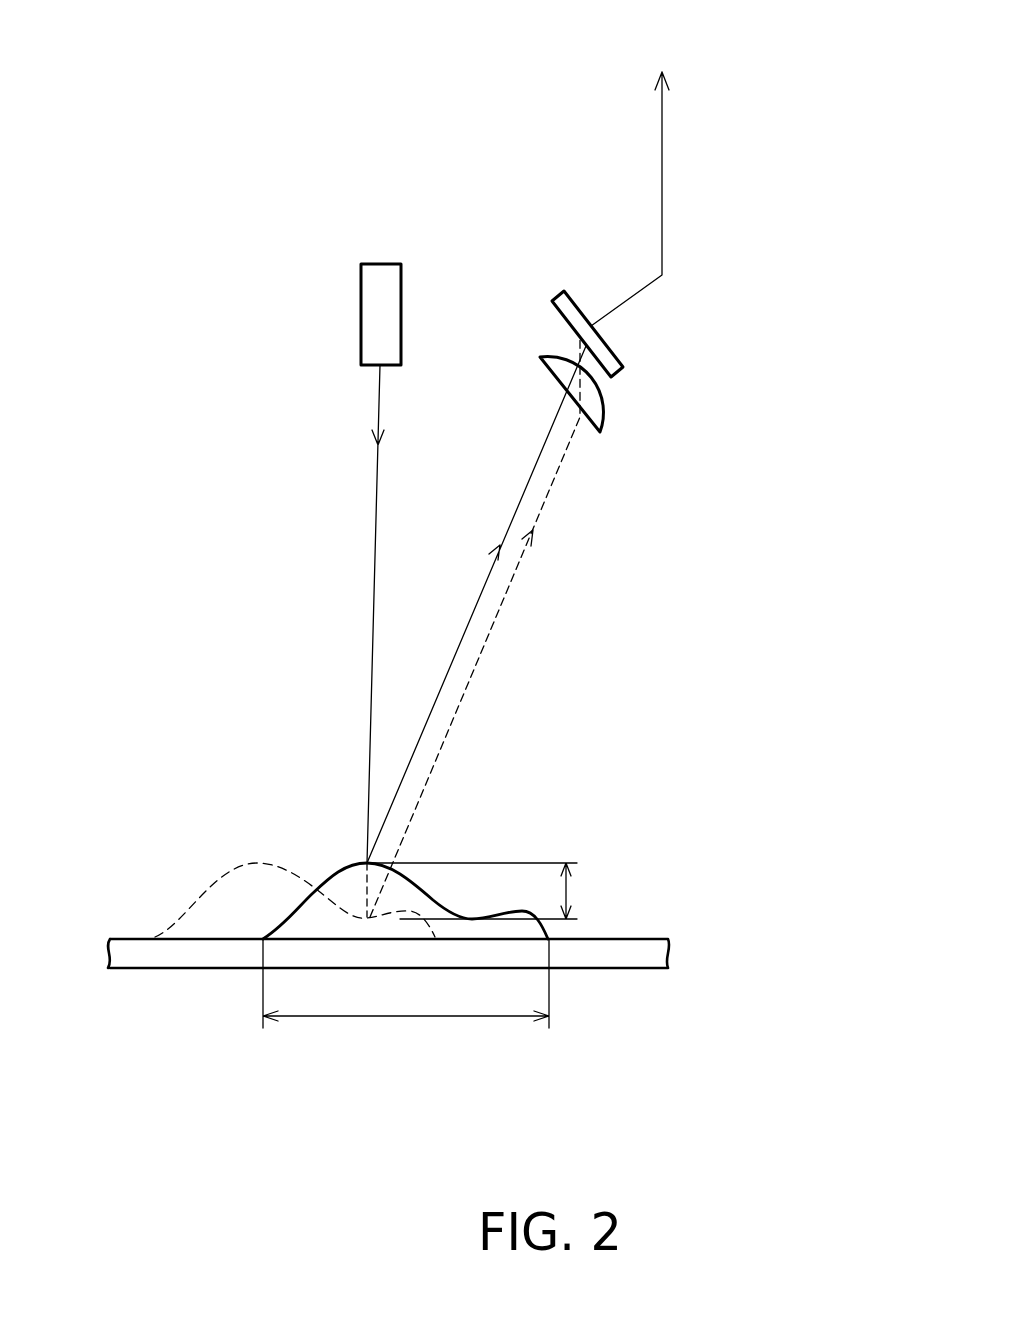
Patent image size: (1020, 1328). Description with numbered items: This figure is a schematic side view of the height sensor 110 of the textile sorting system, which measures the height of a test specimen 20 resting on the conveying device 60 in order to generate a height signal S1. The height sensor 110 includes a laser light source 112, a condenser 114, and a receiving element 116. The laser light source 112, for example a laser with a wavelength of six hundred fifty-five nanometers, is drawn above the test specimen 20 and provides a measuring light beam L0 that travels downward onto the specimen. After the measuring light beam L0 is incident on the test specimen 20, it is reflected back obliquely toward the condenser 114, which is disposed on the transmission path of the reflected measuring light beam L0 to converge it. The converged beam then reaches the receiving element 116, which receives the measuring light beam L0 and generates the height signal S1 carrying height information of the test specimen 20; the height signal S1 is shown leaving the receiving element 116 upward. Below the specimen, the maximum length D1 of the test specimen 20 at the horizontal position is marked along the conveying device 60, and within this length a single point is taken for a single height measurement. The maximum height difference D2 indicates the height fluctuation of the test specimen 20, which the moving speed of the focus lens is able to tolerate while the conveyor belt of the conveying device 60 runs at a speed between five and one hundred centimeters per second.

The height sensor 110 is at (443, 217).
The laser light source 112 is at (373, 309).
The condenser 114 is at (597, 427).
The receiving element 116 is at (610, 360).
The test specimen 20 is at (342, 885).
The conveying device 60 is at (653, 948).
The measuring light beam L0 is at (374, 676).
The height signal S1 is at (662, 192).
The maximum length D1 is at (406, 996).
The maximum height difference D2 is at (487, 891).